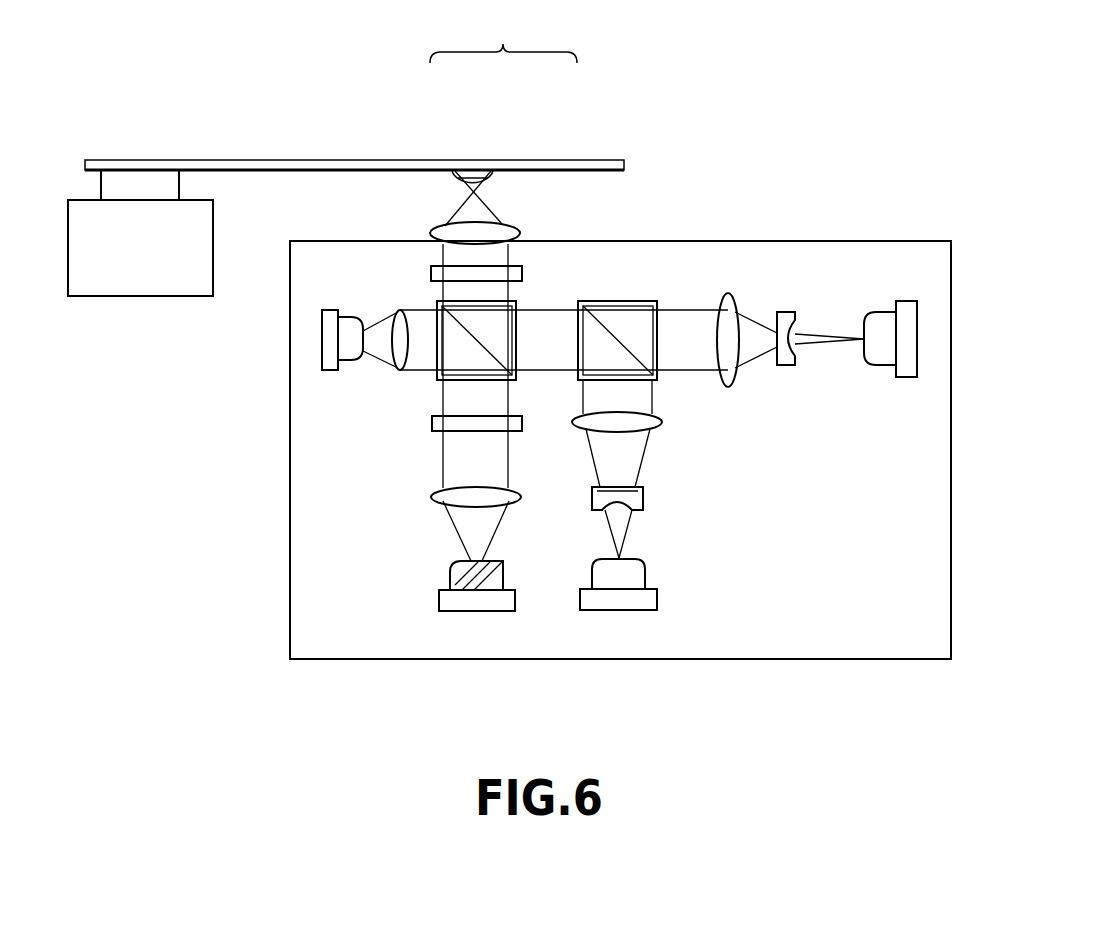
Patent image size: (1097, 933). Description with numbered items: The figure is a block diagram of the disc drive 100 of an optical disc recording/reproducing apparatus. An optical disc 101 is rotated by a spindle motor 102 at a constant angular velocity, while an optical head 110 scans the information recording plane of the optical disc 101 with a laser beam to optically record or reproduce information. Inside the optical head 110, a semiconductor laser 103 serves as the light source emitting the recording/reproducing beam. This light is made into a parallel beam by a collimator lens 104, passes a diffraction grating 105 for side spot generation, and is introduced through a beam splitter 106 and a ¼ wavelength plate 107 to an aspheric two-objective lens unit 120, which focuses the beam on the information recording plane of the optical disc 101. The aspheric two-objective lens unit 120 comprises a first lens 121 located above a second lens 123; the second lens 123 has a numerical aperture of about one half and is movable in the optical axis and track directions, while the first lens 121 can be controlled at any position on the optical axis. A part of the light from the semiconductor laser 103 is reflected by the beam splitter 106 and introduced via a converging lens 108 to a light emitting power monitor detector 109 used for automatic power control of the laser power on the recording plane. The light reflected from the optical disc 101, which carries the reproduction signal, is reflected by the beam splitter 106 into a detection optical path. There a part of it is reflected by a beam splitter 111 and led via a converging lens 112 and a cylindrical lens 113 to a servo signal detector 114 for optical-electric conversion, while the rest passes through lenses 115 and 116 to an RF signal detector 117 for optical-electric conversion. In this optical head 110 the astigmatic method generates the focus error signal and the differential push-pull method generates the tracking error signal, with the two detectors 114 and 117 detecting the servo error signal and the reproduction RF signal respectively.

The disc drive 100 is at (842, 94).
The optical disc 101 is at (323, 159).
The spindle motor 102 is at (175, 298).
The semiconductor laser 103 is at (497, 575).
The collimator lens 104 is at (520, 497).
The diffraction grating 105 is at (522, 421).
The beam splitter 106 is at (517, 318).
The ¼ wavelength plate 107 is at (431, 273).
The converging lens 108 is at (401, 355).
The light emitting power monitor detector 109 is at (351, 349).
The optical head 110 is at (757, 210).
The beam splitter 111 is at (626, 312).
The converging lens 112 is at (636, 430).
The cylindrical lens 113 is at (642, 498).
The servo signal detector 114 is at (636, 574).
The lens 115 is at (733, 306).
The lens 116 is at (786, 313).
The RF signal detector 117 is at (880, 350).
The aspheric two-objective lens unit 120 is at (531, 37).
The first lens 121 is at (452, 168).
The second lens 123 is at (493, 232).